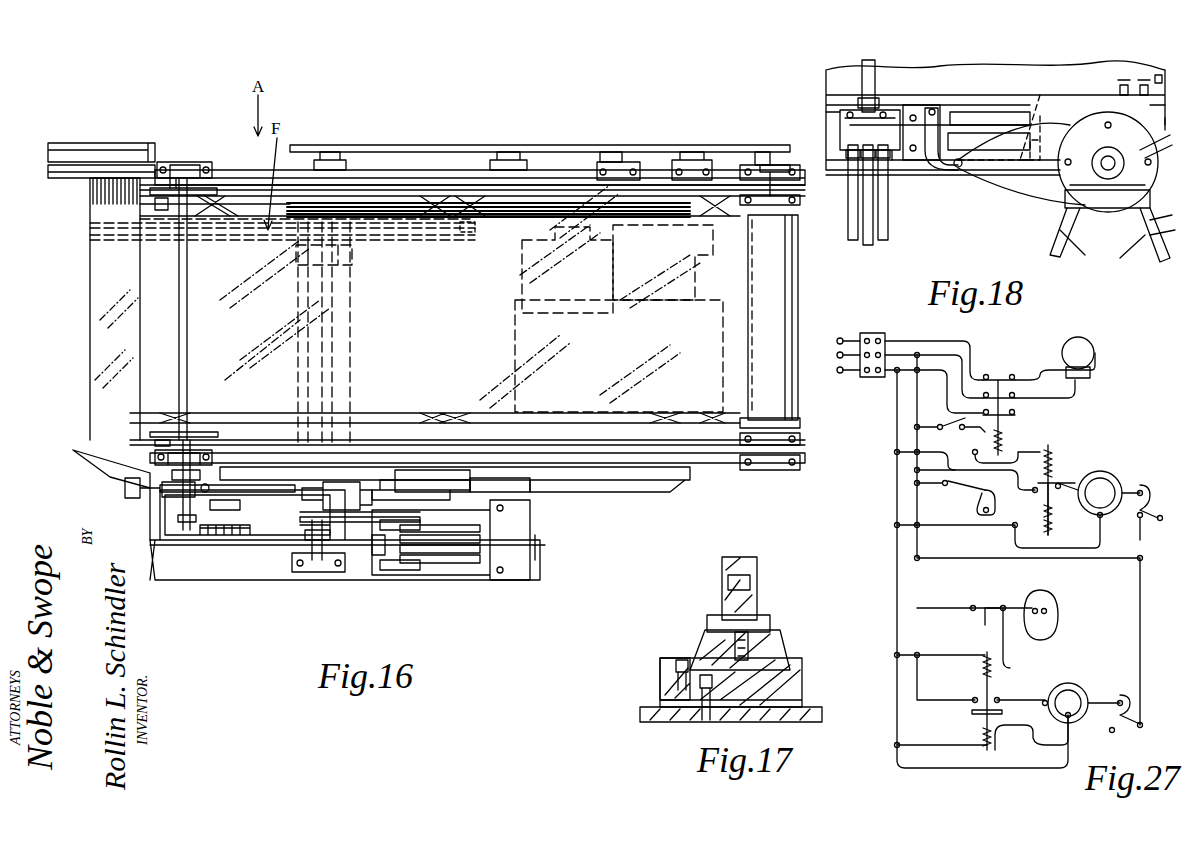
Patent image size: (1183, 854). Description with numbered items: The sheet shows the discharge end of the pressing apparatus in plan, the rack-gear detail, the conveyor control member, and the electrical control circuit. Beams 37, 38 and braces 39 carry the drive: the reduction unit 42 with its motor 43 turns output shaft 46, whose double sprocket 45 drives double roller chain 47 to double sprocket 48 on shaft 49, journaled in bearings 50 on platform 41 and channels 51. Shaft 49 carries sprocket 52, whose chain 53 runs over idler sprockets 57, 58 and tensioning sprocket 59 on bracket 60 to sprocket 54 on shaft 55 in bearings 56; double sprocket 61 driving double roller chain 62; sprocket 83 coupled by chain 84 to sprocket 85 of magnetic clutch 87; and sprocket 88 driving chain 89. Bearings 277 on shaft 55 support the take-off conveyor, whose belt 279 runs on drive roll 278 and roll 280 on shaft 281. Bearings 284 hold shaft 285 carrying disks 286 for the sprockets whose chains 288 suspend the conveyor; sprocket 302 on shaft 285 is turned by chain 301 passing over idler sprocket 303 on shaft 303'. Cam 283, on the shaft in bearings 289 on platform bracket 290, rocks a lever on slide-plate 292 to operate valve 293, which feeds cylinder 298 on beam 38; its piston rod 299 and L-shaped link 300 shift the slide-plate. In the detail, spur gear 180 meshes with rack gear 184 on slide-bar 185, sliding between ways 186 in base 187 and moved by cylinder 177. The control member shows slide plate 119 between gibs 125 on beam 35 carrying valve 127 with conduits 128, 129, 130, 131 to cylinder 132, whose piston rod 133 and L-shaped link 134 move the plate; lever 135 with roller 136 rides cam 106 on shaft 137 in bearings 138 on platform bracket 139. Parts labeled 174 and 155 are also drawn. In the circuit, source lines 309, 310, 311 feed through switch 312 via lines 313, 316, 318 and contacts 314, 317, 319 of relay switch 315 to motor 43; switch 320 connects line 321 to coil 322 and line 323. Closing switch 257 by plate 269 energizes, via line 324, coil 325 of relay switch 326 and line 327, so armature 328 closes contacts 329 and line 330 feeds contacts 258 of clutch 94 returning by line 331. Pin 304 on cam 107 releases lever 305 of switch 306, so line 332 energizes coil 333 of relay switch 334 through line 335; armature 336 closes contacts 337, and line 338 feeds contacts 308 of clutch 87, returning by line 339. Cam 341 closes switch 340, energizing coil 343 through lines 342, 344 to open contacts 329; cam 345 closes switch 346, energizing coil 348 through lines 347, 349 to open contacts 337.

In FIG. 16, the guide bar 174 is at (115, 148).
In FIG. 16, the braces 39 is at (72, 176).
In FIG. 16, the double sprocket 48 is at (358, 176).
In FIG. 16, the complementary roll 280 is at (140, 216).
In FIG. 16, the shaft 285 is at (188, 305).
In FIG. 16, the double roller chain 62 is at (226, 240).
In FIG. 16, the double sprocket 61 is at (292, 226).
In FIG. 16, the bearings 284 is at (185, 162).
In FIG. 16, the annular disks 286 is at (210, 180).
In FIG. 16, the shaft 281 is at (165, 180).
In FIG. 16, the roller chain 288 is at (168, 205).
In FIG. 16, the roller chain 53 is at (400, 144).
In FIG. 16, the sprocket 52 is at (326, 150).
In FIG. 16, the idler sprocket 57 is at (510, 150).
In FIG. 16, the beam 37 is at (540, 172).
In FIG. 16, the tensioning sprocket 59 is at (600, 121).
In FIG. 16, the bracket 60 is at (635, 160).
In FIG. 16, the idler sprocket 58 is at (695, 150).
In FIG. 16, the sprocket 54 is at (758, 150).
In FIG. 16, the shaft 55 is at (775, 166).
In FIG. 16, the bearings 56 is at (788, 172).
In FIG. 16, the bearings 277 is at (798, 200).
In FIG. 16, the bearings 50 is at (352, 257).
In FIG. 16, the transversely disposed channels 51 is at (335, 338).
In FIG. 16, the shaft 49 is at (330, 380).
In FIG. 16, the double roller chain 47 is at (398, 215).
In FIG. 16, the electric motor 43 is at (520, 295).
In FIG. 27, the electric motor 43 is at (1094, 355).
In FIG. 16, the output shaft 46 is at (665, 222).
In FIG. 16, the double sprocket 45 is at (682, 218).
In FIG. 16, the variable speed reduction unit 42 is at (520, 352).
In FIG. 16, the endless conveyor belt 279 is at (788, 303).
In FIG. 16, the beam 38 is at (700, 463).
In FIG. 16, the cylinder 298 is at (620, 490).
In FIG. 16, the tubular drive roll 278 is at (800, 421).
In FIG. 16, the L-shaped link 300 is at (462, 478).
In FIG. 16, the piston rod 299 is at (535, 496).
In FIG. 16, the sprocket 302 is at (150, 475).
In FIG. 16, the roller chain 301 is at (125, 486).
In FIG. 16, the cylinder 177 is at (230, 500).
In FIG. 16, the roller chain 89 is at (188, 520).
In FIG. 16, the shaft 303' is at (168, 585).
In FIG. 16, the idler sprocket 303 is at (216, 576).
In FIG. 16, the sprocket 88 is at (325, 560).
In FIG. 16, the sprocket 83 is at (330, 526).
In FIG. 16, the valve 293 is at (345, 480).
In FIG. 16, the slide-plate 292 is at (410, 478).
In FIG. 16, the platform bracket 290 is at (488, 578).
In FIG. 16, the bearings 289 is at (440, 578).
In FIG. 16, the cam 283 is at (490, 510).
In FIG. 16, the roller chain 84 is at (478, 533).
In FIG. 16, the sprocket 85 is at (478, 545).
In FIG. 16, the magnetic clutch 87 is at (474, 560).
In FIG. 27, the magnetic clutch 87 is at (1085, 681).
In FIG. 16, the platform 41 is at (536, 541).
In FIG. 17, the platform 41 is at (655, 707).
In FIG. 18, the beam 35 is at (962, 76).
In FIG. 18, the cylinder 132 is at (1158, 100).
In FIG. 18, the supply conduit 128 is at (872, 82).
In FIG. 18, the gibs 125 is at (832, 100).
In FIG. 18, the valve 127 is at (855, 128).
In FIG. 18, the conduit 131 is at (850, 200).
In FIG. 18, the return conduit 129 is at (870, 218).
In FIG. 18, the conduit 130 is at (885, 190).
In FIG. 18, the slide plate 119 is at (912, 112).
In FIG. 18, the lever 135 is at (948, 125).
In FIG. 18, the L-shaped link 134 is at (1000, 125).
In FIG. 18, the piston rod 133 is at (1060, 105).
In FIG. 18, the roller 136 is at (958, 175).
In FIG. 18, the cam 106 is at (1048, 182).
In FIG. 18, the shaft 137 is at (1068, 212).
In FIG. 18, the bearings 138 is at (1105, 200).
In FIG. 18, the platform bracket 139 is at (1102, 252).
In FIG. 18, the brace 155 is at (1160, 232).
In FIG. 17, the base 187 is at (800, 688).
In FIG. 17, the ways 186 is at (695, 658).
In FIG. 17, the slide-bar 185 is at (775, 650).
In FIG. 17, the rack gear 184 is at (768, 622).
In FIG. 17, the spur gear 180 is at (757, 574).
In FIG. 27, the source line 309 is at (845, 337).
In FIG. 27, the source line 310 is at (842, 358).
In FIG. 27, the source line 311 is at (842, 374).
In FIG. 27, the switch 312 is at (884, 335).
In FIG. 27, the line 313 is at (968, 346).
In FIG. 27, the line 316 is at (928, 360).
In FIG. 27, the line 318 is at (945, 370).
In FIG. 27, the contacts 314 is at (998, 377).
In FIG. 27, the contacts 319 is at (985, 400).
In FIG. 27, the relay switch 315 is at (1027, 416).
In FIG. 27, the contacts 317 is at (1018, 398).
In FIG. 27, the coil 322 is at (1002, 443).
In FIG. 27, the switch 320 is at (957, 423).
In FIG. 27, the line 321 is at (922, 425).
In FIG. 27, the line 323 is at (935, 455).
In FIG. 27, the return line 344 is at (1007, 454).
In FIG. 27, the coil 343 is at (1055, 462).
In FIG. 27, the relay switch 326 is at (1065, 455).
In FIG. 27, the contacts 329 is at (1060, 490).
In FIG. 27, the coil 325 is at (1064, 516).
In FIG. 27, the armature 328 is at (1064, 531).
In FIG. 27, the line 324 is at (1018, 492).
In FIG. 27, the switch 257 is at (965, 486).
In FIG. 27, the switch actuator plate 269 is at (980, 513).
In FIG. 27, the line 327 is at (975, 528).
In FIG. 27, the line 331 is at (1016, 546).
In FIG. 27, the magnetic clutch 94 is at (1110, 513).
In FIG. 27, the line 342 is at (1120, 478).
In FIG. 27, the line 330 is at (1085, 478).
In FIG. 27, the contacts 258 is at (1115, 478).
In FIG. 27, the cam 341 is at (1152, 493).
In FIG. 27, the switch 340 is at (1158, 522).
In FIG. 27, the lever 305 is at (1010, 606).
In FIG. 27, the pin 304 is at (1047, 614).
In FIG. 27, the cam 107 is at (1052, 600).
In FIG. 27, the switch 306 is at (985, 625).
In FIG. 27, the line 335 is at (927, 653).
In FIG. 27, the line 332 is at (1003, 658).
In FIG. 27, the coil 333 is at (980, 666).
In FIG. 27, the relay switch 334 is at (967, 693).
In FIG. 27, the armature 336 is at (990, 690).
In FIG. 27, the contacts 337 is at (972, 708).
In FIG. 27, the line 338 is at (1010, 702).
In FIG. 27, the contacts 308 is at (1048, 708).
In FIG. 27, the cam 345 is at (1122, 693).
In FIG. 27, the switch 346 is at (1118, 732).
In FIG. 27, the line 339 is at (1068, 732).
In FIG. 27, the line 347 is at (1040, 745).
In FIG. 27, the coil 348 is at (982, 733).
In FIG. 27, the line 349 is at (933, 748).